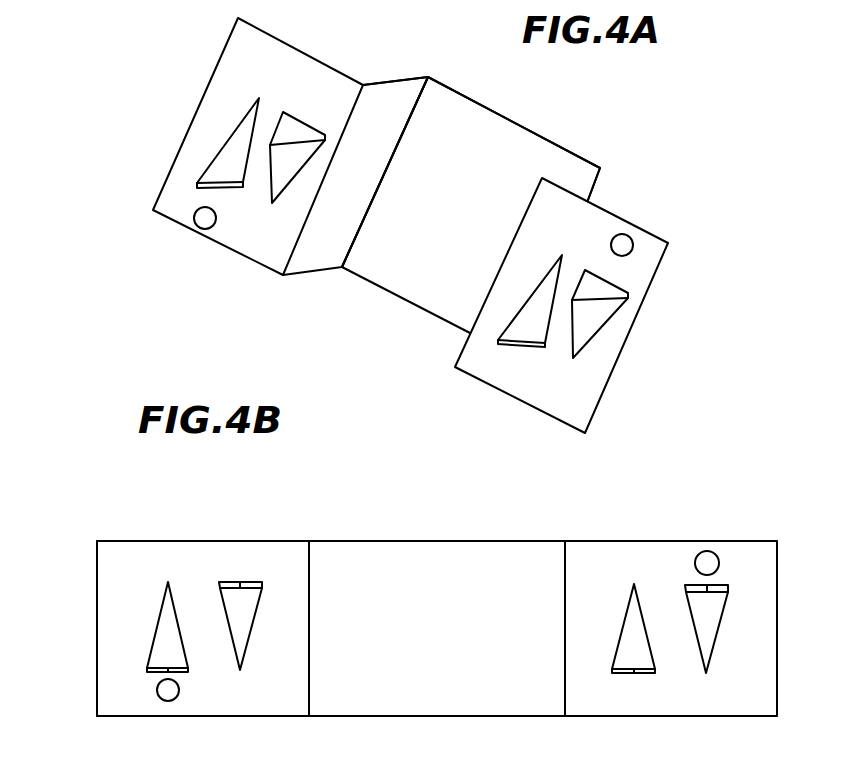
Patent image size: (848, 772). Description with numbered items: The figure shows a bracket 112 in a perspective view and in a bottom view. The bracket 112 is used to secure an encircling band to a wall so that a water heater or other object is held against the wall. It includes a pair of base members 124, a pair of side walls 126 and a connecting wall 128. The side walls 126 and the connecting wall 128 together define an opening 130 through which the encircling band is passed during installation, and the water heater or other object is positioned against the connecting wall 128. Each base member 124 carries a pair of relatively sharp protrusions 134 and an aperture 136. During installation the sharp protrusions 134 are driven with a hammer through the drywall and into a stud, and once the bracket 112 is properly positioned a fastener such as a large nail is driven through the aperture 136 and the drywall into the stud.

In FIG. 4A, the bracket 112 is at (662, 161).
In FIG. 4B, the bracket 112 is at (666, 494).
In FIG. 4A, the base member 124 is at (242, 40).
In FIG. 4B, the base member 124 is at (132, 557).
In FIG. 4A, the side wall 126 is at (385, 95).
In FIG. 4A, the connecting wall 128 is at (507, 120).
In FIG. 4B, the connecting wall 128 is at (452, 540).
In FIG. 4A, the opening 130 is at (474, 214).
In FIG. 4B, the opening 130 is at (457, 637).
In FIG. 4A, the sharp protrusion 134 is at (212, 177).
In FIG. 4B, the sharp protrusion 134 is at (157, 663).
In FIG. 4A, the aperture 136 is at (203, 230).
In FIG. 4B, the aperture 136 is at (170, 700).